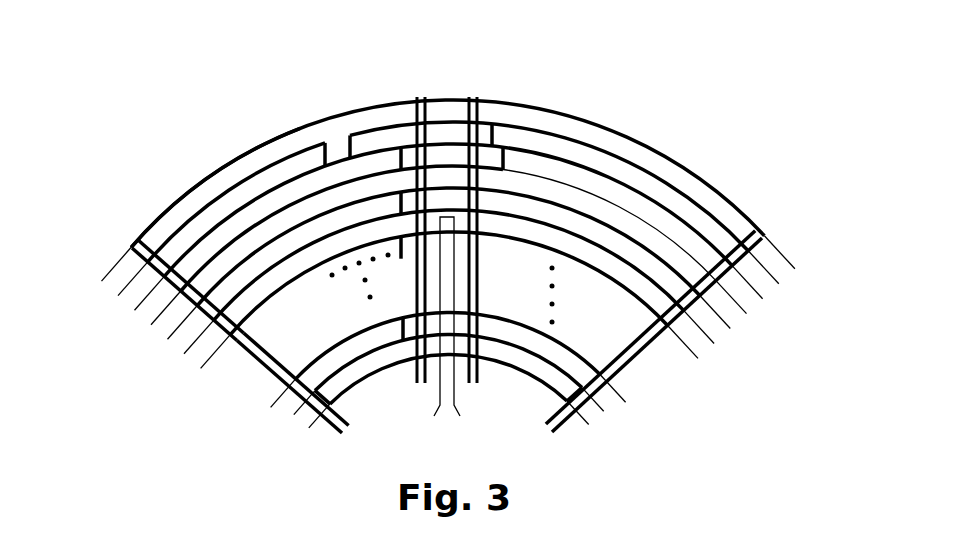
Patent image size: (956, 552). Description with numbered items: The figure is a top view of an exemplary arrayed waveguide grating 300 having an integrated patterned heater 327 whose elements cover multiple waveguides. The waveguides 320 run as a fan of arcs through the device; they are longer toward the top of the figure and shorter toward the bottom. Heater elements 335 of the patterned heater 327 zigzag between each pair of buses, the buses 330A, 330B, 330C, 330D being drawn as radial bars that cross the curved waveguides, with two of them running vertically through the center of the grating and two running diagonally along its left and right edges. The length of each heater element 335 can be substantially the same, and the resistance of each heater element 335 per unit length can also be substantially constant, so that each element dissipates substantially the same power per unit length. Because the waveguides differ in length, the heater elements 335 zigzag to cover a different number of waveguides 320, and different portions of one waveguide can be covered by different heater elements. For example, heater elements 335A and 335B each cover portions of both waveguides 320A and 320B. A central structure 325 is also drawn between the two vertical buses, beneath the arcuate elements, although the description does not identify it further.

The arrayed waveguide grating 300 is at (645, 100).
The waveguides 320 is at (803, 282).
The waveguide 320A is at (106, 252).
The waveguide 320B is at (112, 291).
The center feed element 325 is at (427, 406).
The patterned heater 327 is at (246, 374).
The bus 330A is at (421, 85).
The bus 330B is at (472, 85).
The bus 330C is at (128, 223).
The bus 330D is at (771, 230).
The heater elements 335 is at (725, 181).
The heater element 335A is at (188, 171).
The heater element 335B is at (283, 143).